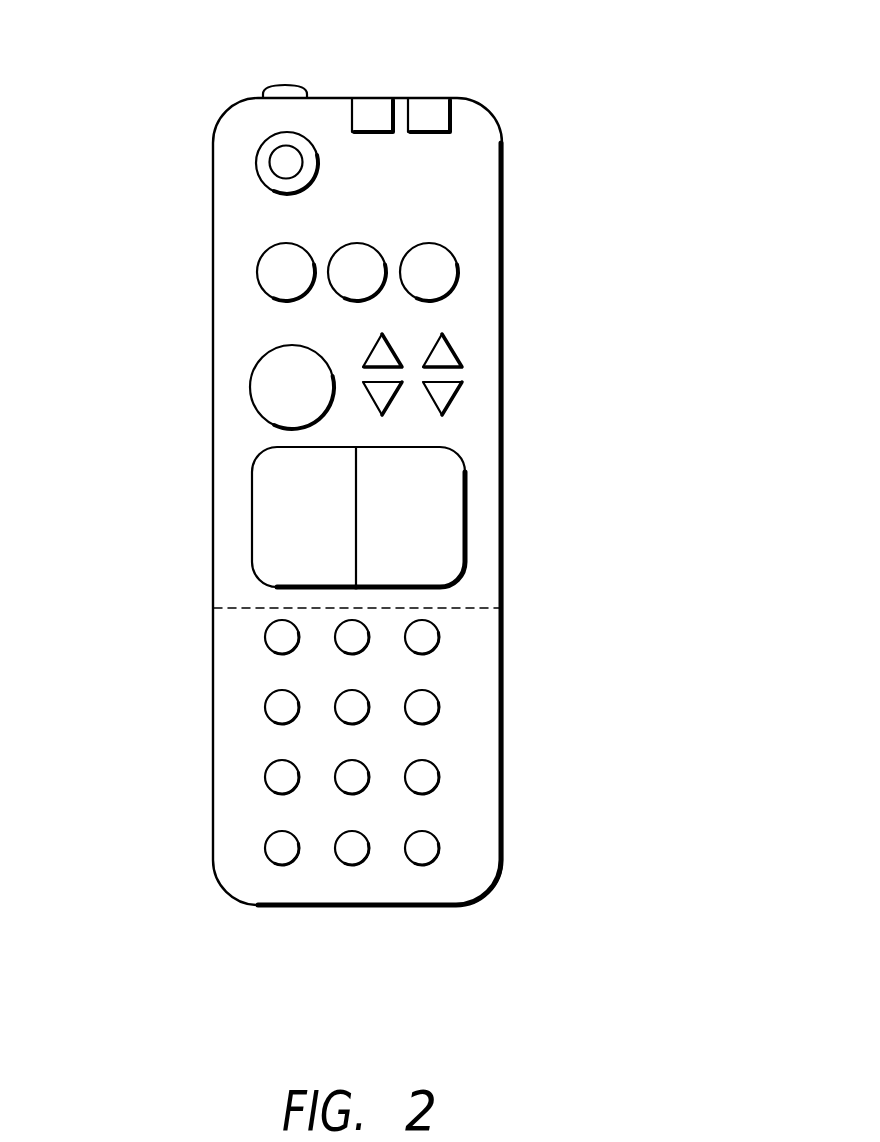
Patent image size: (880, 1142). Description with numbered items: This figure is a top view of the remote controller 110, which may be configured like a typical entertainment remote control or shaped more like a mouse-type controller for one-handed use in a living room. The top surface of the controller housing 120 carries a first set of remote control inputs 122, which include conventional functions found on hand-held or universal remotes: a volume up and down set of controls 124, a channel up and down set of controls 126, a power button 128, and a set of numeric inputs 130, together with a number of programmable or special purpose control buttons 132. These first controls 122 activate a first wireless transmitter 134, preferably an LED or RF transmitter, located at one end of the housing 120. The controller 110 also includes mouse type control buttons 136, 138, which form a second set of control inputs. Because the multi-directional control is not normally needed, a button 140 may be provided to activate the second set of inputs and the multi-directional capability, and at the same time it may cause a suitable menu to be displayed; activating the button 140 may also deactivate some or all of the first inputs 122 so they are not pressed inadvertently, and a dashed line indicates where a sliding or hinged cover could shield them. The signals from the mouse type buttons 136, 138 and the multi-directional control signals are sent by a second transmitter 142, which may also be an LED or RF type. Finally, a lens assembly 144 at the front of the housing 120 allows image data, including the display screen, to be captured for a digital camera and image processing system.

The remote controller 110 is at (595, 145).
The controller housing 120 is at (490, 777).
The first remote control inputs 122 is at (480, 323).
The volume up and down set of controls 124 is at (452, 393).
The channel up and down set of controls 126 is at (395, 348).
The power button 128 is at (267, 163).
The set of numeric inputs 130 is at (438, 702).
The programmable or special purpose control buttons 132 is at (256, 270).
The first wireless transmitter 134 is at (375, 108).
The mouse type control button 136 is at (275, 532).
The mouse type control button 138 is at (410, 527).
The button 140 is at (265, 392).
The second transmitter 142 is at (442, 107).
The lens assembly 144 is at (282, 86).